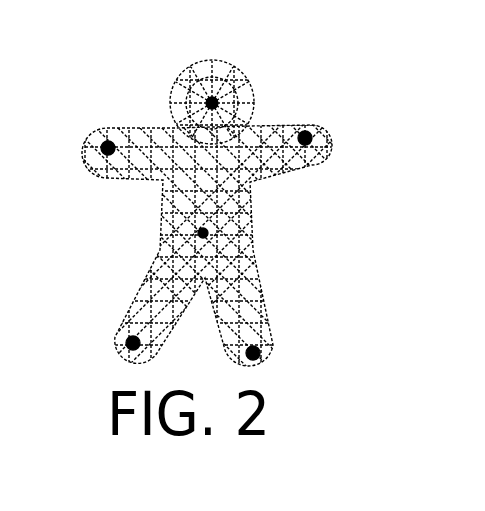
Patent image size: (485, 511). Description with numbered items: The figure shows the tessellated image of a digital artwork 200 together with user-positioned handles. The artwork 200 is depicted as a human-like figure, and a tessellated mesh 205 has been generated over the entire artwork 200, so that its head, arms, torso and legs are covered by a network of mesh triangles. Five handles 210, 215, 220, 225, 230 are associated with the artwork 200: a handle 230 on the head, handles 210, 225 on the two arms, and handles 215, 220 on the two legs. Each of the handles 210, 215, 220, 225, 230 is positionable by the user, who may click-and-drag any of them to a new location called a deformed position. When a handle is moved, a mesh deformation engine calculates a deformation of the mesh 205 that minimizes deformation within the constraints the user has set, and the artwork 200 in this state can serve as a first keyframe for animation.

The digital artwork 200 is at (165, 43).
The tessellated mesh 205 is at (220, 233).
The handle 210 is at (105, 140).
The handle 215 is at (137, 338).
The handle 220 is at (270, 353).
The handle 225 is at (322, 134).
The handle 230 is at (193, 103).